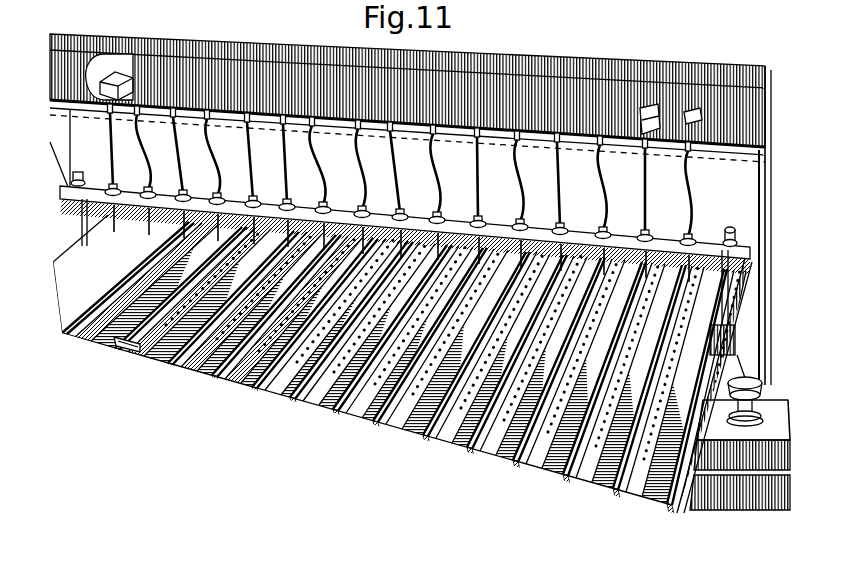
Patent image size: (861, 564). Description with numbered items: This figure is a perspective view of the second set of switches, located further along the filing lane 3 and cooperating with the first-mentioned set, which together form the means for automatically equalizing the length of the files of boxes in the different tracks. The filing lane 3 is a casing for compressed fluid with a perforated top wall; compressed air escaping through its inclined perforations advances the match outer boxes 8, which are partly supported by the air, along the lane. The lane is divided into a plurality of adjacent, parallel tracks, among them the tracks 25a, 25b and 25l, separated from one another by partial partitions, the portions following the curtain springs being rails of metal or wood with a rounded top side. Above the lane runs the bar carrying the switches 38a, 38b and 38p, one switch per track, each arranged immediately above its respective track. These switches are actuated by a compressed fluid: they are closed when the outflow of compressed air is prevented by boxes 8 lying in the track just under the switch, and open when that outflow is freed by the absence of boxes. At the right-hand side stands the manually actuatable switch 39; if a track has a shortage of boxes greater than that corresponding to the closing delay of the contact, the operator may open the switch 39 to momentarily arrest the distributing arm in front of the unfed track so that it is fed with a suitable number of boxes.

The filing lane 3 is at (444, 437).
The match outer box 8 is at (127, 347).
The track 25l is at (158, 353).
The track 25b is at (597, 463).
The track 25a is at (655, 477).
The switch of the second set 38p is at (114, 55).
The switch of the second set 38b is at (651, 108).
The switch of the second set 38a is at (694, 110).
The manually actuatable switch 39 is at (754, 380).